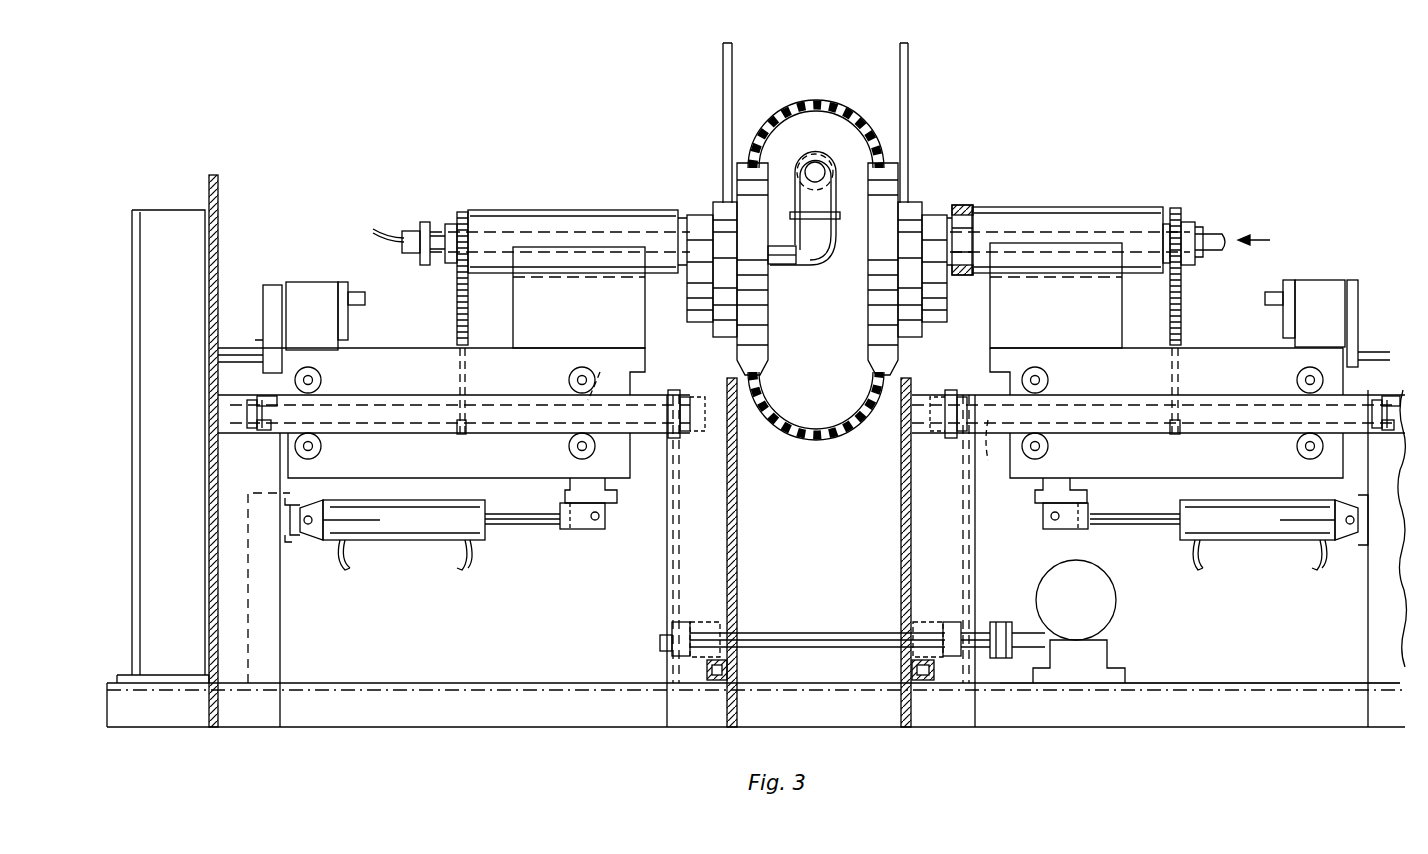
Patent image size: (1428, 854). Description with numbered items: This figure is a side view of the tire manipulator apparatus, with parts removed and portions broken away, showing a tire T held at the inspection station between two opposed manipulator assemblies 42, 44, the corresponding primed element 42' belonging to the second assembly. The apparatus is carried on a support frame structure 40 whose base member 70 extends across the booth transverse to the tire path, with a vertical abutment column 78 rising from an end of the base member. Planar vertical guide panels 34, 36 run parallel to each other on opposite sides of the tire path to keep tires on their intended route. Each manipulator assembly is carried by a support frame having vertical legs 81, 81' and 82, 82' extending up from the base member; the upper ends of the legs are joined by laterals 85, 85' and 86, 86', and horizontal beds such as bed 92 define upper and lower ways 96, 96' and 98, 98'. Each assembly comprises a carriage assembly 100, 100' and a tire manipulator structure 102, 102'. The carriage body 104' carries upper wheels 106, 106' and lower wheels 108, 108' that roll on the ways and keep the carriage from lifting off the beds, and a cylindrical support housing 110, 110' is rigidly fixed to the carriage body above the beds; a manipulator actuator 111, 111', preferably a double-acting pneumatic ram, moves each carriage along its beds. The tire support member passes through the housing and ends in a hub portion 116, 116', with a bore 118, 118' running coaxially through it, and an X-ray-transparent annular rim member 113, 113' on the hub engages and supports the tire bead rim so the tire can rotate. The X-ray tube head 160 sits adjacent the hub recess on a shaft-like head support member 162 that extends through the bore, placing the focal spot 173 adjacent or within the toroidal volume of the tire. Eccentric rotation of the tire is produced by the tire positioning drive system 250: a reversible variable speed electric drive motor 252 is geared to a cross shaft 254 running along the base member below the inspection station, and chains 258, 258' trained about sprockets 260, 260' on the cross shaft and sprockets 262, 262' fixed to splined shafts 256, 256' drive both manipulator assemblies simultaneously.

The tire T is at (800, 100).
The vertical guide panel 34 is at (728, 522).
The vertical guide panel 36 is at (912, 522).
The support frame structure 40 is at (365, 728).
The manipulator assembly 42 is at (560, 216).
The manipulator assembly 42' is at (1158, 414).
The manipulator assembly 44 is at (1056, 202).
The base member 70 is at (1052, 727).
The vertical abutment column 78 is at (180, 532).
The vertical leg 81 is at (293, 580).
The vertical leg 81' is at (1357, 558).
The vertical leg 82 is at (726, 539).
The vertical leg 82' is at (907, 539).
The lateral support member 85 is at (219, 413).
The lateral support member 85' is at (1383, 398).
The lateral 86 is at (753, 552).
The lateral 86' is at (880, 552).
The horizontal bed 92 is at (442, 424).
The way 96 is at (456, 391).
The way 96' is at (1166, 391).
The way 98 is at (472, 468).
The way 98' is at (1176, 468).
The carriage assembly 100 is at (291, 327).
The carriage assembly 100' is at (1290, 323).
The tire manipulator structure 102 is at (692, 248).
The tire manipulator structure 102' is at (951, 248).
The carriage body 104' is at (1235, 454).
The upper wheel set 106 is at (445, 375).
The upper wheel set 106' is at (1172, 375).
The lower wheel set 108 is at (445, 450).
The lower wheel set 108' is at (1172, 450).
The cylindrical support housing 110 is at (424, 252).
The cylindrical support housing 110' is at (1206, 252).
The manipulator actuator 111 is at (445, 537).
The manipulator actuator 111' is at (1205, 532).
The annular rim member 113 is at (780, 269).
The annular rim member 113' is at (860, 278).
The hub portion 116 is at (682, 282).
The hub portion 116' is at (954, 282).
The bore 118 is at (579, 250).
The bore 118' is at (1056, 250).
The X-ray tube head 160 is at (815, 252).
The head support member 162 is at (778, 264).
The focal spot 173 is at (800, 165).
The tire positioning drive system 250 is at (1118, 591).
The electric drive motor 252 is at (1076, 600).
The cross shaft 254 is at (815, 633).
The splined shaft 256 is at (614, 374).
The splined shaft 256' is at (995, 460).
The chain 258 is at (632, 581).
The chain 258' is at (1005, 554).
The sprocket 260 is at (658, 646).
The sprocket 260' is at (976, 666).
The sprocket 262 is at (696, 432).
The sprocket 262' is at (939, 432).